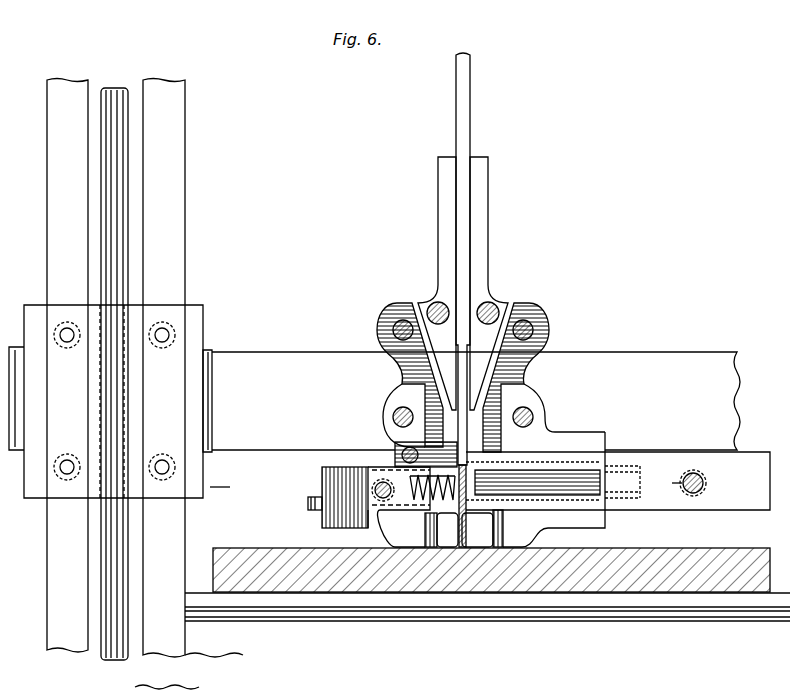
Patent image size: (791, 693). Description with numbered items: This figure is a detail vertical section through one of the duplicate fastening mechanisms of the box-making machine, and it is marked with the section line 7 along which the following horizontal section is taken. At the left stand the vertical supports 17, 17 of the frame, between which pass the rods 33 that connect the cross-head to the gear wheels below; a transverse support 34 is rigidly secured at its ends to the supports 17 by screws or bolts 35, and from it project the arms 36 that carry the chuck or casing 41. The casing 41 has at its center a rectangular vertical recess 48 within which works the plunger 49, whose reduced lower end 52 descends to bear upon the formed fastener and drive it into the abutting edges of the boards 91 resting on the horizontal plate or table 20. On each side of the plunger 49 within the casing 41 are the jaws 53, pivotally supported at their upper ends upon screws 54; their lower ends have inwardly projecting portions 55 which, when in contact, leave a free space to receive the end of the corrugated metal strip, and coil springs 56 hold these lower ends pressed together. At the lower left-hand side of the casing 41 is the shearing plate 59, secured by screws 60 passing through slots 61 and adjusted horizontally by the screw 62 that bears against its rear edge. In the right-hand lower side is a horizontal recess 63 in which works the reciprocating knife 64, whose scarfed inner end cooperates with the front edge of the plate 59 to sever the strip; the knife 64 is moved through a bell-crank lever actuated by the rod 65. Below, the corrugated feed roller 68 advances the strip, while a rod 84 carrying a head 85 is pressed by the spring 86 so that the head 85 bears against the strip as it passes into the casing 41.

The section line 7— 7 is at (446, 481).
The vertical supports 17 is at (116, 368).
The horizontal plate or table 20 is at (462, 641).
The rods 33 is at (116, 86).
The transverse support 34 is at (106, 401).
The screws or bolts 35 is at (162, 342).
The outwardly projecting members or arms 36 is at (471, 401).
The chuck or casing 41 is at (489, 240).
The rectangular vertical recess 48 is at (440, 157).
The plunger 49 is at (472, 130).
The reduced lower end 52 is at (440, 390).
The jaws 53 is at (527, 386).
The screws 54 is at (398, 324).
The inwardly projecting portions 55 is at (441, 530).
The coil springs 56 is at (480, 527).
The shearing plate 59 is at (399, 507).
The screws 60 is at (378, 483).
The slots 61 is at (395, 450).
The screw 62 is at (308, 503).
The horizontal recess 63 is at (606, 452).
The reciprocating knife 64 is at (687, 481).
The rod 65 is at (560, 470).
The corrugated feed roller 68 is at (600, 492).
The rod 84 is at (428, 483).
The head 85 is at (464, 466).
The spring 86 is at (448, 483).
The boards 91 is at (752, 547).